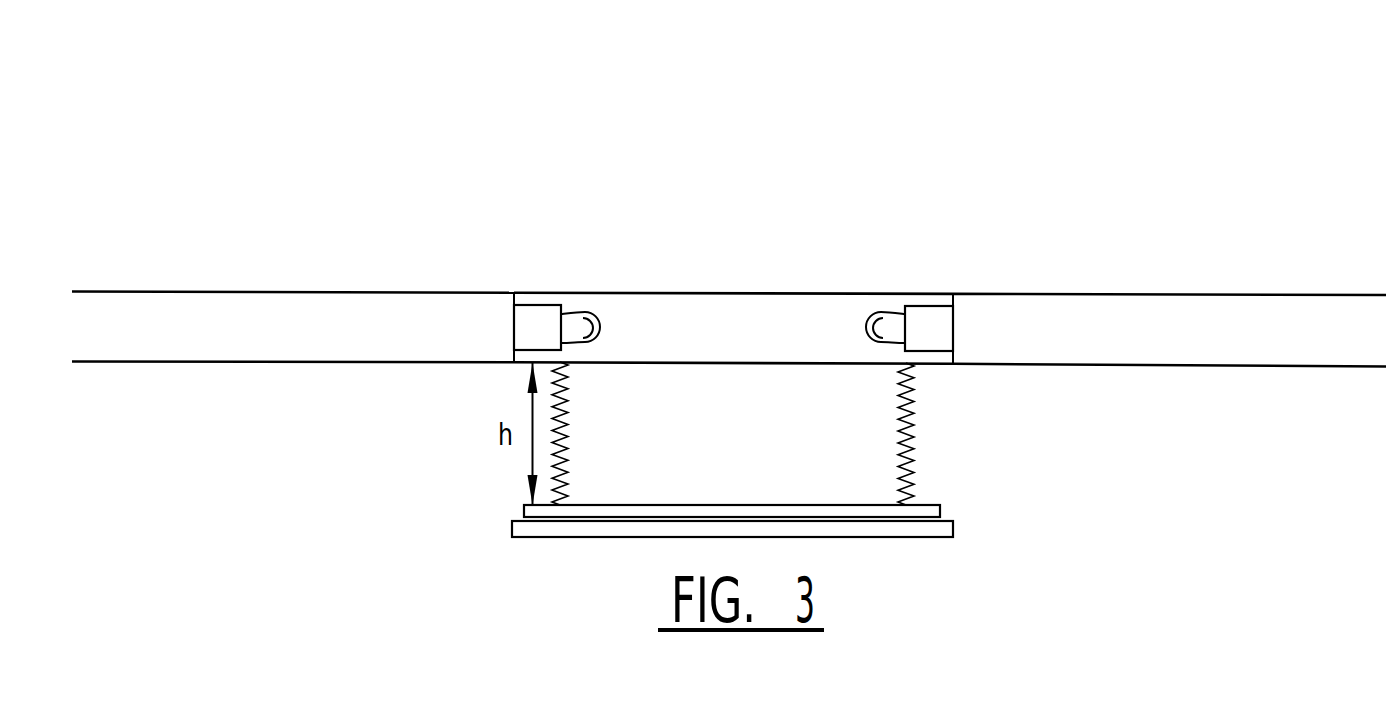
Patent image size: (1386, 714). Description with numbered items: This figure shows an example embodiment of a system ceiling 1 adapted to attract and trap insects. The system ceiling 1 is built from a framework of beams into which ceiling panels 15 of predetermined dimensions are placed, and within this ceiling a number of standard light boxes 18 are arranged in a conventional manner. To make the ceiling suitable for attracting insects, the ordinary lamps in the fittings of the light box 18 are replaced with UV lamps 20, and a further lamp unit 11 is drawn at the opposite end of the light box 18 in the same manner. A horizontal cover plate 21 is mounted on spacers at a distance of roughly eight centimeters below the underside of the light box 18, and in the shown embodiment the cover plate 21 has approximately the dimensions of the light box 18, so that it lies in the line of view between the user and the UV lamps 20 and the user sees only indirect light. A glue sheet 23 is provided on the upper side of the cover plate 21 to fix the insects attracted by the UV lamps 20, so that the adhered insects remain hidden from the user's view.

The system ceiling 1 is at (479, 140).
The magnet element (right) 11 is at (928, 313).
The ceiling panel 15 is at (266, 305).
The light box 18 is at (670, 307).
The UV lamp 20 is at (598, 336).
The cover plate 21 is at (867, 530).
The glue sheet 23 is at (648, 515).